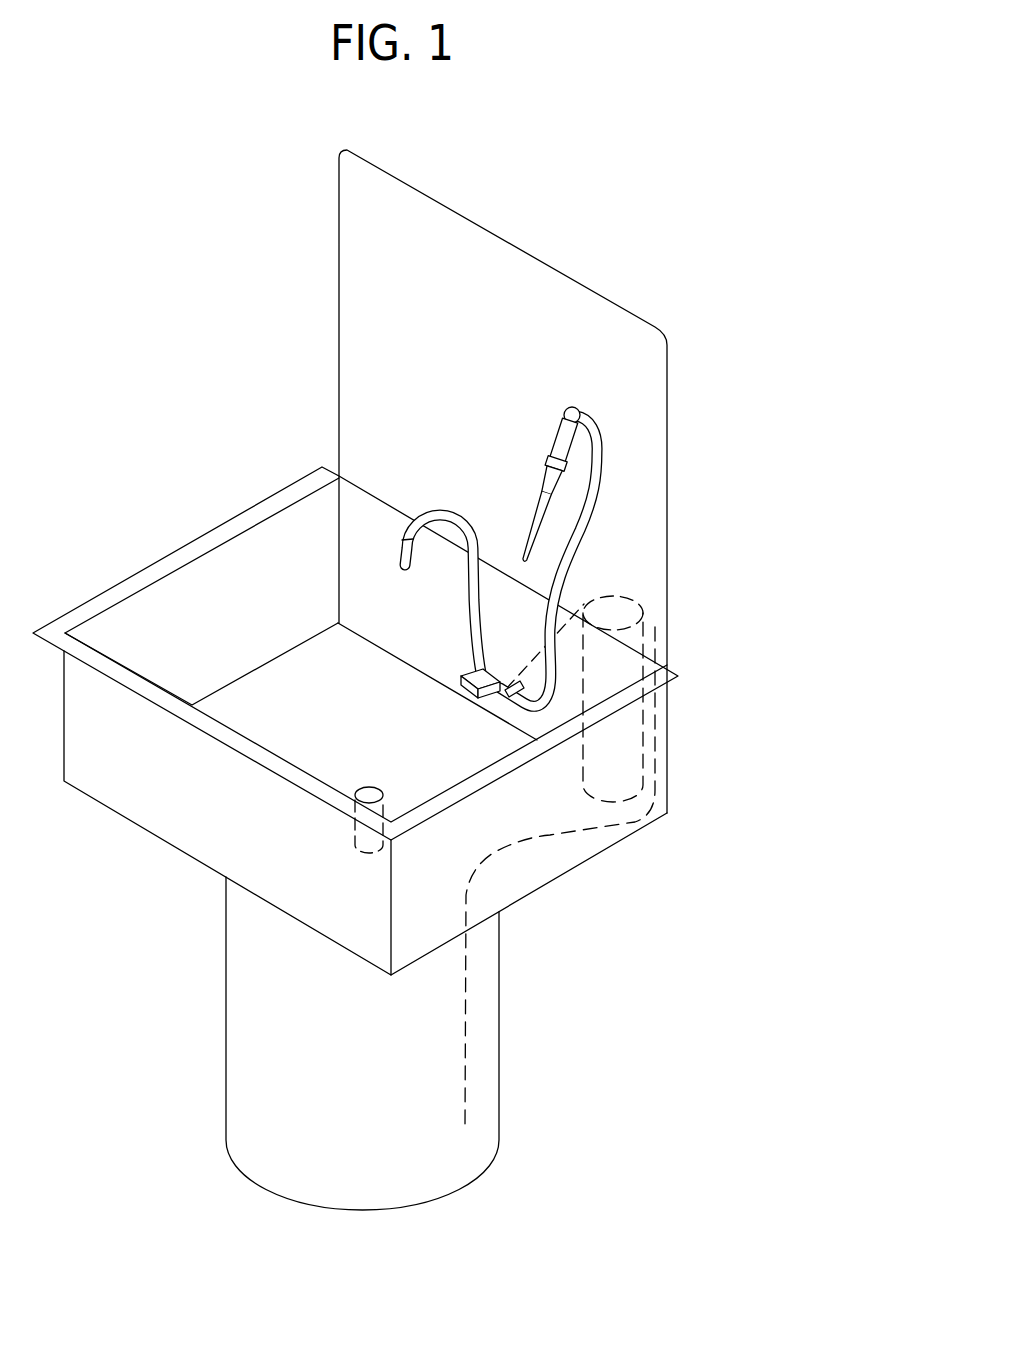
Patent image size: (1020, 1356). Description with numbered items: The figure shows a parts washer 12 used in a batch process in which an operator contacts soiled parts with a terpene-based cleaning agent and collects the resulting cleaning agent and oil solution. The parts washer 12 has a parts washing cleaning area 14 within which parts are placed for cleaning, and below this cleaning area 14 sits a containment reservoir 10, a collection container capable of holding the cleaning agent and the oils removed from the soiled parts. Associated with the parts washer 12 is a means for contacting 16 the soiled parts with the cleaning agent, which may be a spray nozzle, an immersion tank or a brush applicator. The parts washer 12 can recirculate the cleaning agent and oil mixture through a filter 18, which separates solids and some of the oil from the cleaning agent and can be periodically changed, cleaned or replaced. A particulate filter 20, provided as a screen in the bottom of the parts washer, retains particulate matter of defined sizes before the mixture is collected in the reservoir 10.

The containment reservoir 10 is at (500, 1050).
The parts washer 12 is at (727, 662).
The parts washing cleaning area 14 is at (546, 868).
The means for contacting 16 is at (434, 514).
The filter 18 is at (623, 612).
The particulate filter 20 is at (384, 797).